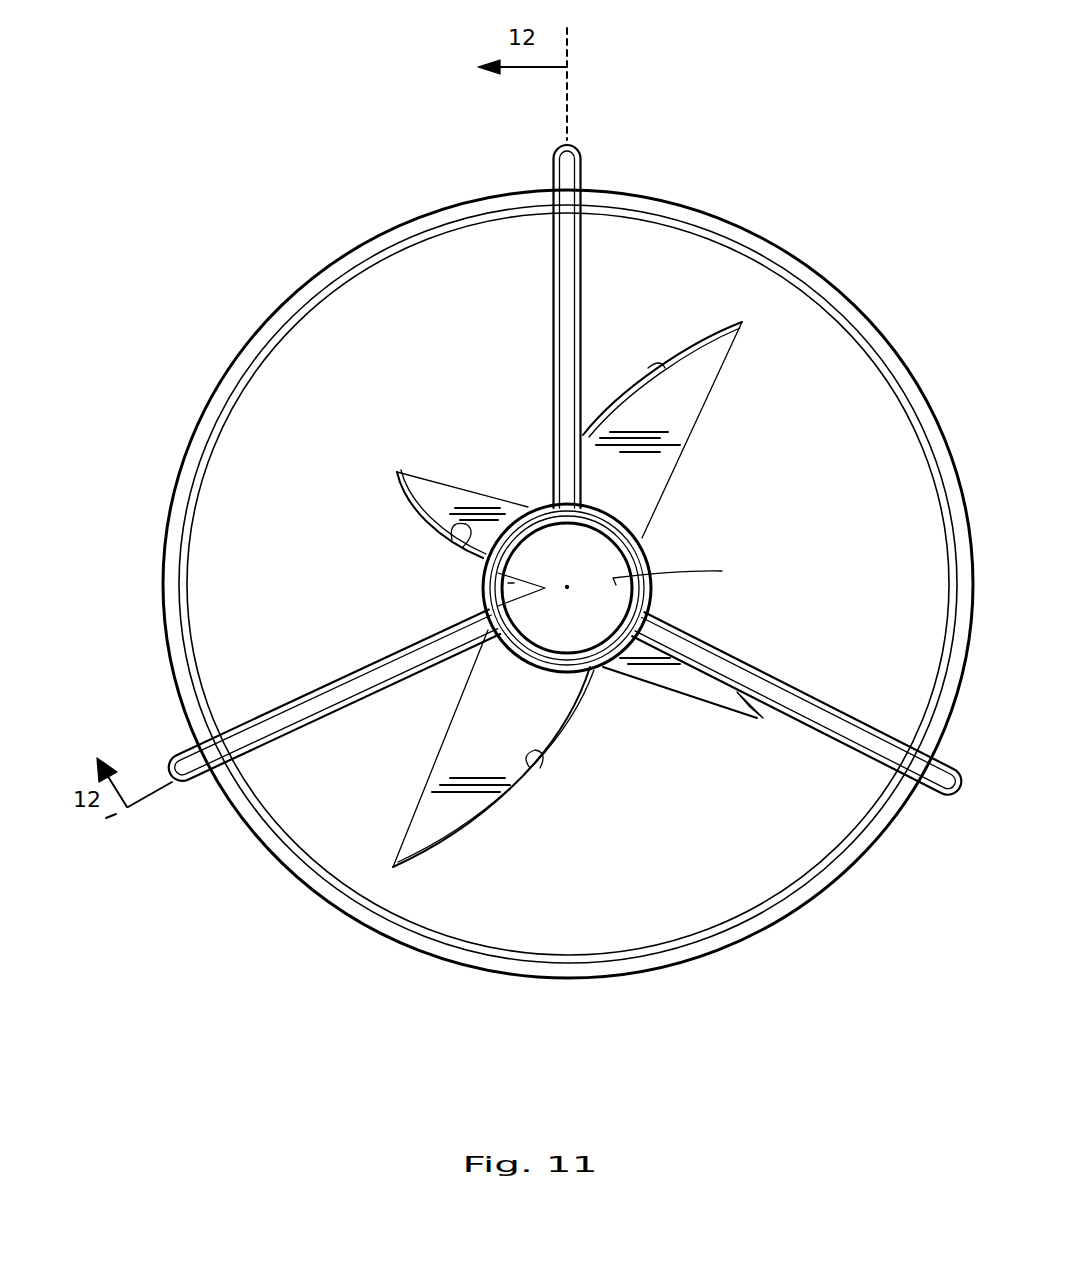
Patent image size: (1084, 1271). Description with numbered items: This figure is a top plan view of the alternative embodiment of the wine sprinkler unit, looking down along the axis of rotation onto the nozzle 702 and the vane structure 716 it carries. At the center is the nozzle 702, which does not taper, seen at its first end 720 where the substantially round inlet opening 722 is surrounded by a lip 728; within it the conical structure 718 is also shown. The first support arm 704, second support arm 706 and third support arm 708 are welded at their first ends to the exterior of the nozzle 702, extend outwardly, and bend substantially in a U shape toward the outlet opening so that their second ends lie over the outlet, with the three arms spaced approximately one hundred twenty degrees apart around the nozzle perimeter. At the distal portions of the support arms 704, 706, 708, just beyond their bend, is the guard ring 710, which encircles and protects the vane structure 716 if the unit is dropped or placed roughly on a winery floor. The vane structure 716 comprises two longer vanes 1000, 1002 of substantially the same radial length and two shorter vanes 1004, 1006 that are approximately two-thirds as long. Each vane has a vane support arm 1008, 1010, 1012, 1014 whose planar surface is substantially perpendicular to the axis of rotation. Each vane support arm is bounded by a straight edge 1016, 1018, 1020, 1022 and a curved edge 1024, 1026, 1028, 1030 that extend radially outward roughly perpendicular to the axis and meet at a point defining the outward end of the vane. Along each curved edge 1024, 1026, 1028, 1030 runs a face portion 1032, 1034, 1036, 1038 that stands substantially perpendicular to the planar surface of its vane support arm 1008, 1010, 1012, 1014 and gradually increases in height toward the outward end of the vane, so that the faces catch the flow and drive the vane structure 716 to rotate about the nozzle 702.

The nozzle 702 is at (470, 579).
The first support arm 704 is at (592, 293).
The second support arm 706 is at (846, 772).
The third support arm 708 is at (258, 708).
The guard ring 710 is at (852, 308).
The vane structure 716 is at (727, 455).
The conical structure 718 is at (688, 572).
The first end 720 is at (482, 596).
The inlet opening 722 is at (610, 552).
The lip 728 is at (645, 600).
The longer vane 1000 is at (726, 394).
The longer vane 1002 is at (418, 766).
The shorter vane 1004 is at (664, 708).
The shorter vane 1006 is at (458, 462).
The vane support arm 1008 is at (630, 427).
The vane support arm 1010 is at (430, 509).
The vane support arm 1012 is at (527, 707).
The vane support arm 1014 is at (642, 673).
The straight edge 1016 is at (730, 352).
The straight edge 1018 is at (610, 667).
The straight edge 1020 is at (452, 718).
The straight edge 1022 is at (505, 498).
The curved edge 1024 is at (690, 340).
The curved edge 1026 is at (760, 718).
The curved edge 1028 is at (493, 810).
The curved edge 1030 is at (420, 496).
The face portion 1032 is at (650, 367).
The face portion 1034 is at (747, 697).
The face portion 1036 is at (543, 760).
The face portion 1038 is at (458, 542).